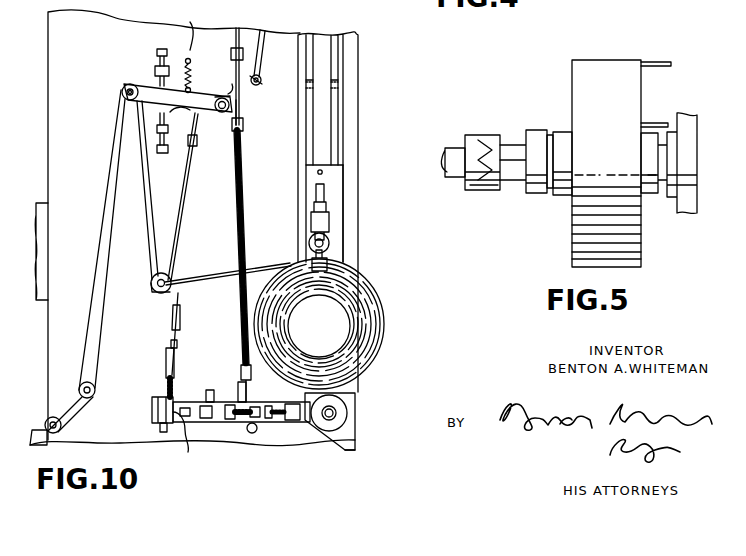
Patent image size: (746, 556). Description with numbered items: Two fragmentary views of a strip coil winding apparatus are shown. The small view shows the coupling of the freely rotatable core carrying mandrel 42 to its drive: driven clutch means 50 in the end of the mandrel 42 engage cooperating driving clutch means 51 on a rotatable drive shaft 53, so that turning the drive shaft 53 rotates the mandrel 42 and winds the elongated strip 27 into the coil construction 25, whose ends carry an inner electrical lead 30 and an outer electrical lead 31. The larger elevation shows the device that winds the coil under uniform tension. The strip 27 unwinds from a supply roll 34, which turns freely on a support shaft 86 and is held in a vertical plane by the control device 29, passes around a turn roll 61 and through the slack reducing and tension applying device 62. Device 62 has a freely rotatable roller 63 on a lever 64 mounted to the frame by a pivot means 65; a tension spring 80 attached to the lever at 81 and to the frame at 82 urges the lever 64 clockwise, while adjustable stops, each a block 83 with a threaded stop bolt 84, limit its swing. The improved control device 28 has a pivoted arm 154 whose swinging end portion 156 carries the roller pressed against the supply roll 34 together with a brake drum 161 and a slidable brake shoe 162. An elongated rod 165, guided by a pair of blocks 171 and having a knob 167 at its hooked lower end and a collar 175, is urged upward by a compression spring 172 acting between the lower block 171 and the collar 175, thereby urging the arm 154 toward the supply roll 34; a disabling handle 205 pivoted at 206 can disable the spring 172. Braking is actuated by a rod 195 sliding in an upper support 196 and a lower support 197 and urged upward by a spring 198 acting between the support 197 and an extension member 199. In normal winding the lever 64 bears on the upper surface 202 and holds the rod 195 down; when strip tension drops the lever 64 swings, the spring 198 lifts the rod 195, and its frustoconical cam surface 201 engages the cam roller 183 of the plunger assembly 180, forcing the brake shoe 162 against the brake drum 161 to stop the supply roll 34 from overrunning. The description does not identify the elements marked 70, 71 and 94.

In FIG. 5, the coil construction 25 is at (563, 81).
In FIG. 10, the strip 27 is at (96, 326).
In FIG. 10, the control device 28 is at (215, 380).
In FIG. 10, the control device 29 is at (346, 203).
In FIG. 5, the inner electrical lead 30 is at (666, 120).
In FIG. 5, the outer electrical lead 31 is at (666, 62).
In FIG. 10, the supply roll 34 is at (372, 318).
In FIG. 5, the mandrel 42 is at (562, 197).
In FIG. 5, the driven clutch means 50 is at (495, 136).
In FIG. 5, the driving clutch means 51 is at (470, 190).
In FIG. 5, the drive shaft 53 is at (452, 148).
In FIG. 10, the turn roll 61 is at (165, 273).
In FIG. 10, the slack reducing and tension applying device 62 is at (113, 87).
In FIG. 10, the roller 63 is at (122, 104).
In FIG. 10, the lever 64 is at (220, 111).
In FIG. 10, the pivot means 65 is at (228, 92).
In FIG. 10, the pulley 70 is at (86, 380).
In FIG. 10, the pulley 71 is at (58, 417).
In FIG. 10, the tension spring 80 is at (190, 62).
In FIG. 10, the spring attachment on lever 81 is at (192, 88).
In FIG. 10, the spring attachment on frame 82 is at (199, 15).
In FIG. 10, the block 83 is at (155, 70).
In FIG. 10, the threaded stop bolt 84 is at (157, 50).
In FIG. 10, the shaft 86 is at (330, 335).
In FIG. 10, the column 94 is at (330, 68).
In FIG. 10, the arm 154 is at (232, 425).
In FIG. 10, the swinging end portion 156 is at (321, 450).
In FIG. 10, the brake drum 161 is at (348, 408).
In FIG. 10, the brake shoe 162 is at (356, 449).
In FIG. 10, the elongated rod 165 is at (242, 105).
In FIG. 10, the knob 167 is at (254, 433).
In FIG. 10, the block 171 is at (238, 30).
In FIG. 10, the compression spring 172 is at (248, 187).
In FIG. 10, the collar 175 is at (244, 124).
In FIG. 10, the plunger assembly 180 is at (244, 392).
In FIG. 10, the cam roller 183 is at (186, 450).
In FIG. 10, the rod 195 is at (190, 203).
In FIG. 10, the support 196 is at (198, 144).
In FIG. 10, the support 197 is at (152, 408).
In FIG. 10, the spring 198 is at (166, 380).
In FIG. 10, the extension member 199 is at (167, 323).
In FIG. 10, the cam surface 201 is at (158, 418).
In FIG. 10, the upper surface 202 is at (184, 118).
In FIG. 10, the disabling handle 205 is at (288, 30).
In FIG. 10, the pivot 206 is at (262, 80).